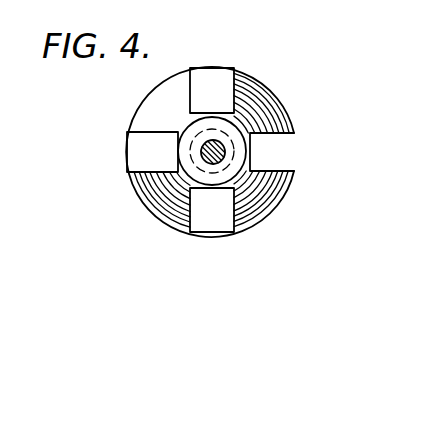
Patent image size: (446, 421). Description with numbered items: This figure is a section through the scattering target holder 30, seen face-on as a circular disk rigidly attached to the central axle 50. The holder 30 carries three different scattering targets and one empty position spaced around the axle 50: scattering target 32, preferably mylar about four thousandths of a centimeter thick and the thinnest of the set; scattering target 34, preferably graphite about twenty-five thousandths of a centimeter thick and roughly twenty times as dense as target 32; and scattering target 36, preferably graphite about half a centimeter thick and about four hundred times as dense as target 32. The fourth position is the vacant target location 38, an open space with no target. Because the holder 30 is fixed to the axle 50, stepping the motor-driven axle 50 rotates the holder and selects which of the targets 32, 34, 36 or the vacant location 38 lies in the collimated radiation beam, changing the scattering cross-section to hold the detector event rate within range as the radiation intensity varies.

The scattering target holder 30 is at (260, 107).
The scattering target 32 is at (220, 82).
The scattering target 34 is at (136, 138).
The scattering target 36 is at (223, 220).
The vacant target location 38 is at (271, 138).
The axle 50 is at (225, 153).